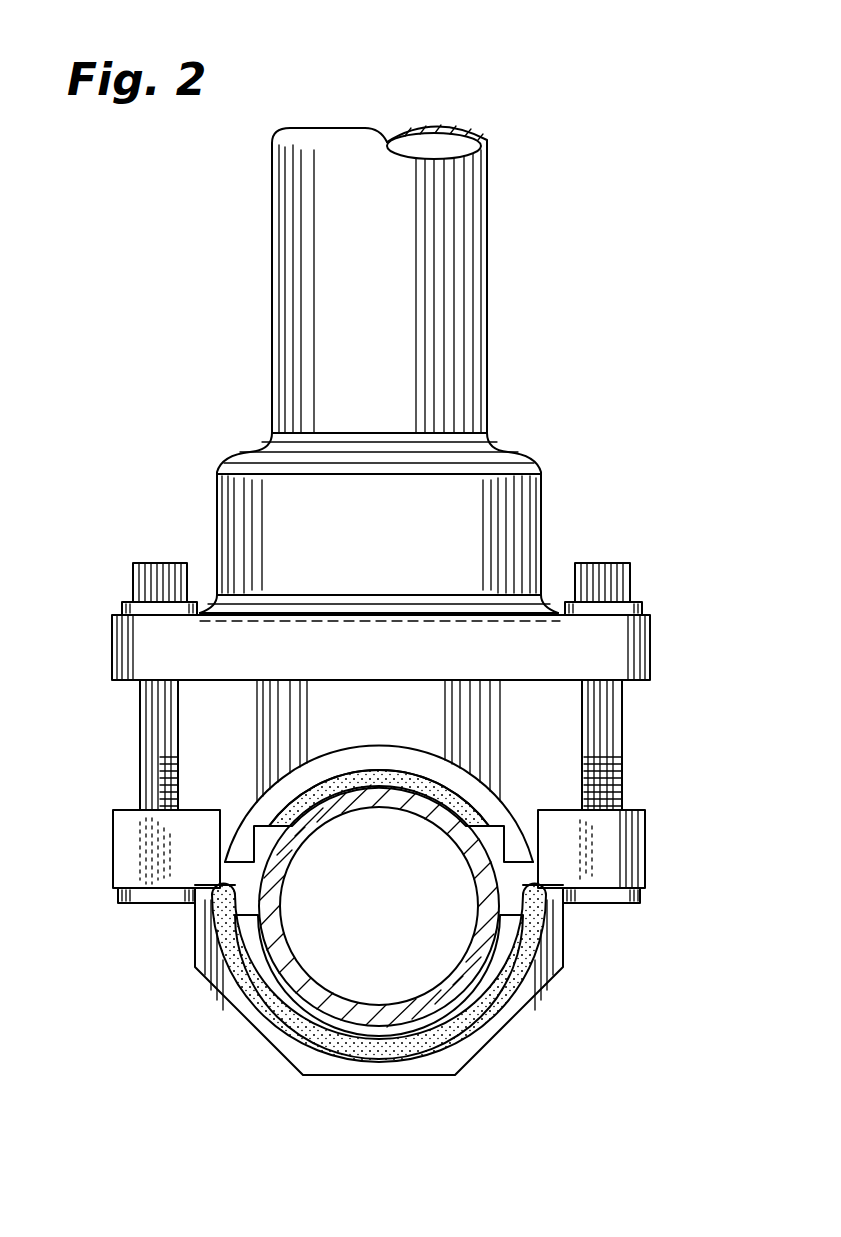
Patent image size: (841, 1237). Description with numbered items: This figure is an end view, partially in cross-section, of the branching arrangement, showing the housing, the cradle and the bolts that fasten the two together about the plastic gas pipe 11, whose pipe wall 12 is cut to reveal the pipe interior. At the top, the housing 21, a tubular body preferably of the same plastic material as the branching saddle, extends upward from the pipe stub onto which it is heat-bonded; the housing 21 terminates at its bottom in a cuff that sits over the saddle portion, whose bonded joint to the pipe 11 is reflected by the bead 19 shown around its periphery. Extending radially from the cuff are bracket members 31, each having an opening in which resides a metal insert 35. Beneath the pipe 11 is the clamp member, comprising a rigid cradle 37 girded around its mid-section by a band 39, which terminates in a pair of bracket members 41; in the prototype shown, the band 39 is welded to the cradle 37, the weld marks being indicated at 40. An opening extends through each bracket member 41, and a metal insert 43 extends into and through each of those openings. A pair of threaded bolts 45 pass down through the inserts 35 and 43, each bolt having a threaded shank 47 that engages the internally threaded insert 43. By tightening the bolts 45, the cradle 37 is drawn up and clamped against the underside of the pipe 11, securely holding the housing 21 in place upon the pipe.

The plastic gas pipe 11 is at (300, 995).
The pipe wall 12 is at (345, 1000).
The bead 19 is at (462, 812).
The housing 21 is at (544, 464).
The bracket members 31 is at (122, 655).
The metal insert 35 is at (121, 606).
The cradle 37 is at (498, 1013).
The band 39 is at (563, 947).
The weld marks 40 is at (520, 967).
The bracket members 41 is at (113, 875).
The metal insert 43 is at (117, 900).
The threaded bolts 45 is at (129, 560).
The bolt shank 47 is at (140, 778).